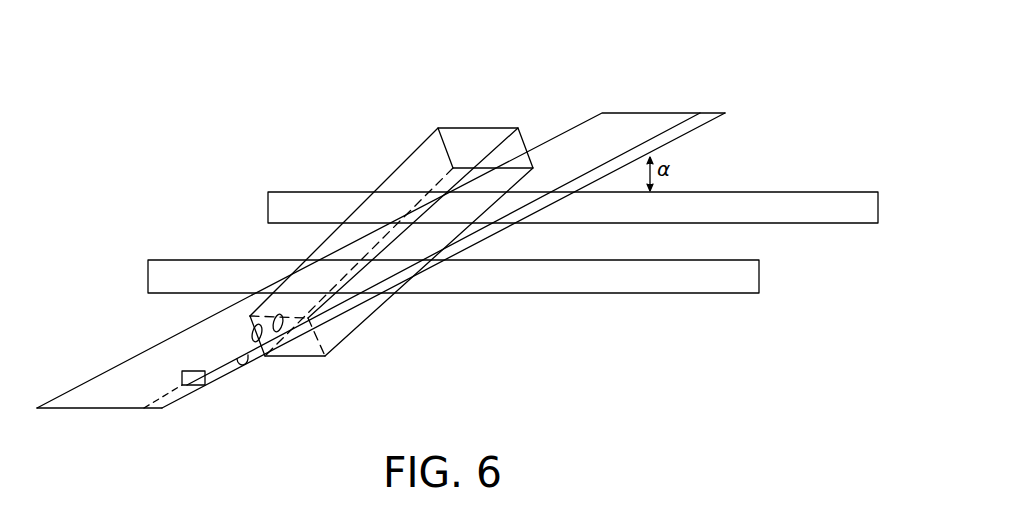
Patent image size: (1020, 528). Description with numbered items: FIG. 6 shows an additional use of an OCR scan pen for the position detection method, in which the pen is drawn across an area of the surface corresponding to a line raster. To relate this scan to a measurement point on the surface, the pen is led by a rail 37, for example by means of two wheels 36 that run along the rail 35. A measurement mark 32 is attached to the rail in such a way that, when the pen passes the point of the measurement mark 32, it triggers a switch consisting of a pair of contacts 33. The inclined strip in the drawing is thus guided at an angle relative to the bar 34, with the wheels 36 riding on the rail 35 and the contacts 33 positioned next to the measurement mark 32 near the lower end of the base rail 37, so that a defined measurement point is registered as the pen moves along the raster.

The measurement mark 32 is at (192, 387).
The pair of contacts 33 is at (246, 366).
The upper bar 34 is at (681, 168).
The rail 35 is at (672, 130).
The wheels 36 is at (278, 313).
The rail 37 is at (95, 410).